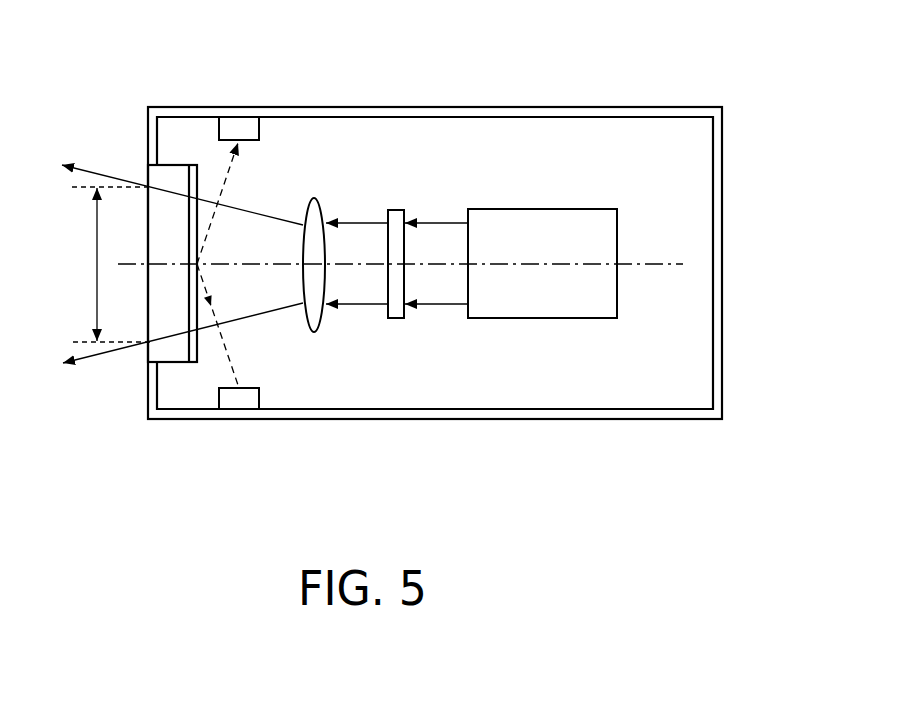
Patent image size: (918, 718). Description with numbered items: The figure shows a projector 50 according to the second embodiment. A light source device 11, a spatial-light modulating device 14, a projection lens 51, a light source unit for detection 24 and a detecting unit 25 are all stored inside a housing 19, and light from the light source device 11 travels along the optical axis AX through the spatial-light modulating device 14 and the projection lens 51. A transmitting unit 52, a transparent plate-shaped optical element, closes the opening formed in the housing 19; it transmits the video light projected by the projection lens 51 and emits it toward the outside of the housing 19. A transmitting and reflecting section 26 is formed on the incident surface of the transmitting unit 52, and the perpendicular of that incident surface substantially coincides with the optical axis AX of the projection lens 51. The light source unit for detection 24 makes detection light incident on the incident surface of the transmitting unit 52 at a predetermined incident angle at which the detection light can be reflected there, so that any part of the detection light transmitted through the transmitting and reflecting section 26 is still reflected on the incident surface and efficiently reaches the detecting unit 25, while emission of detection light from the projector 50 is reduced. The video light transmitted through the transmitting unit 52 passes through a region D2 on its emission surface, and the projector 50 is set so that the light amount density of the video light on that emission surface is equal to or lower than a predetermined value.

The projector 50 is at (168, 65).
The detecting unit 25 is at (245, 125).
The light source unit for detection 24 is at (247, 407).
The transmitting and reflecting section 26 is at (195, 363).
The transmitting unit 52 is at (155, 357).
The projection lens 51 is at (315, 199).
The spatial-light modulating device 14 is at (400, 212).
The light source device 11 is at (602, 209).
The housing 19 is at (678, 413).
The optical axis AX is at (662, 264).
The region D2 is at (103, 264).